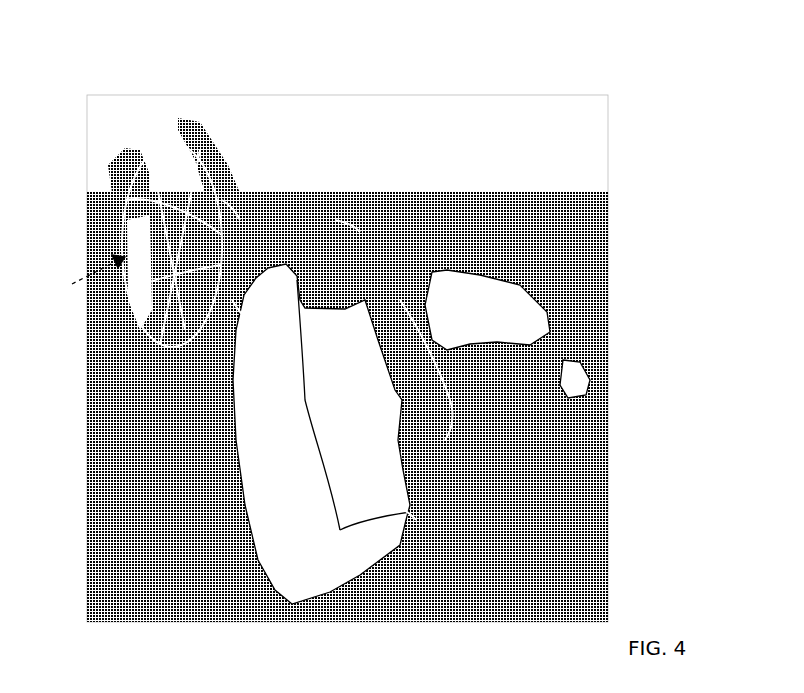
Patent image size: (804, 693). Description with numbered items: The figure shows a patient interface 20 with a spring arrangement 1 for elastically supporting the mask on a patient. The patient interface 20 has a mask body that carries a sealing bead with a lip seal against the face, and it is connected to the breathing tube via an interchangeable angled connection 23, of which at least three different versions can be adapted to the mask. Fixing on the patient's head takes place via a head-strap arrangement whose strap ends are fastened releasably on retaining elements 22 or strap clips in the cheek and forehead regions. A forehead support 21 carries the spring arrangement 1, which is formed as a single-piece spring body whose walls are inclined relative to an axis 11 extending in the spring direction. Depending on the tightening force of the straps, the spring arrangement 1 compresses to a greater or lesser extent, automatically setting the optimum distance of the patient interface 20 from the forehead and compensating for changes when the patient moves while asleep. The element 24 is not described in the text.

The spring arrangement 1 is at (160, 150).
The axis 11 is at (97, 250).
The patient interface 20 is at (425, 438).
The forehead support 21 is at (230, 207).
The retaining elements 22 is at (234, 310).
The angled connection 23 is at (503, 301).
The connector 24 is at (424, 362).